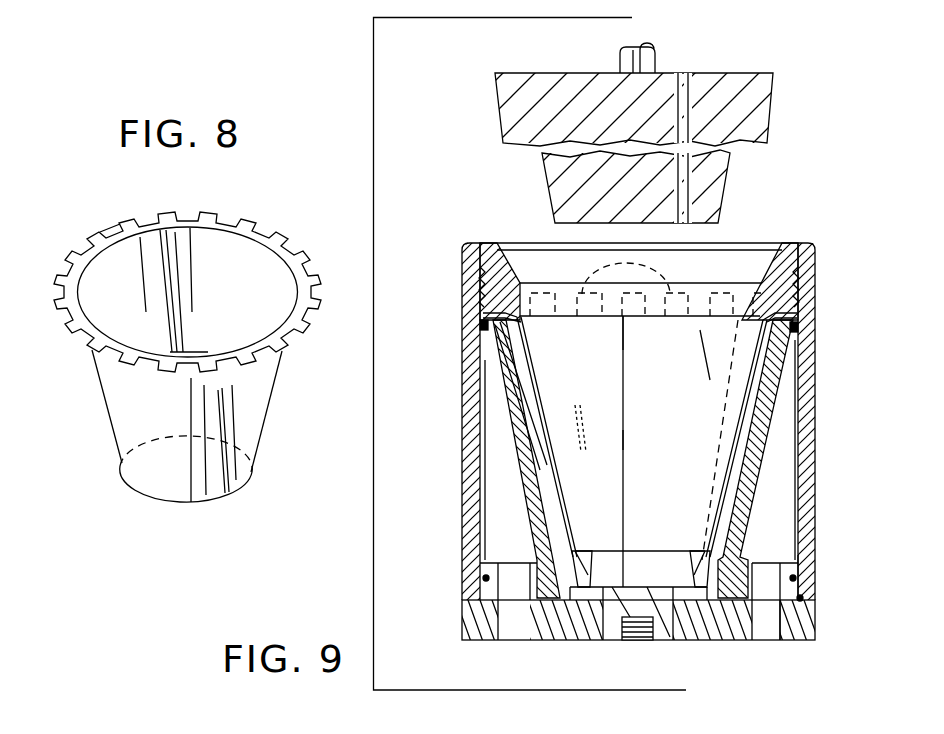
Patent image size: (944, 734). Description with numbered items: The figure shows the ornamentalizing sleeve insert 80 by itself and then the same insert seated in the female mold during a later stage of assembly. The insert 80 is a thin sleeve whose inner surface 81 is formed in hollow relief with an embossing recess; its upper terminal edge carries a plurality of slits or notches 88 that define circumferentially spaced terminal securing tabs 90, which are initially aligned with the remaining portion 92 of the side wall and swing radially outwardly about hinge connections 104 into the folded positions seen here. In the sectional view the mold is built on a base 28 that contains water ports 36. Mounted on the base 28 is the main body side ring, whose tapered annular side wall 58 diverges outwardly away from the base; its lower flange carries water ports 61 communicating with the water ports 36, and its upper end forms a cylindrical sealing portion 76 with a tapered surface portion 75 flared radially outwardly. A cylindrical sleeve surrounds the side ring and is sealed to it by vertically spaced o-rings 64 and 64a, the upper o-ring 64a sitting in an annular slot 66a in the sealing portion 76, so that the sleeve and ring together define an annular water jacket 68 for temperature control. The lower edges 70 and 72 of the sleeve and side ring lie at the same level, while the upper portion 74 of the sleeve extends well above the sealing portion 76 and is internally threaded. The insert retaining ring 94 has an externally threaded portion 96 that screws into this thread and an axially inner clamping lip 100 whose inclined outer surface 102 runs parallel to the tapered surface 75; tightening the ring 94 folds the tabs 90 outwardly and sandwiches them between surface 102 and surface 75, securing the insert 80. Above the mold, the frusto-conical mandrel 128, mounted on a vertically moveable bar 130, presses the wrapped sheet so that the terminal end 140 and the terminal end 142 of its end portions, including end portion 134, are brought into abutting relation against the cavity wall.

In FIG. 9, the base 28 is at (472, 640).
In FIG. 9, the water ports 36 is at (520, 628).
In FIG. 9, the tapered annular side wall 58 is at (758, 430).
In FIG. 9, the water ports 61 is at (518, 563).
In FIG. 9, the annular o-ring 64 is at (793, 563).
In FIG. 9, the annular o-ring 64a is at (480, 330).
In FIG. 9, the annular slot 66a is at (503, 343).
In FIG. 9, the annular water jacket 68 is at (762, 498).
In FIG. 9, the lower edge of cylindrical sleeve 70 is at (803, 597).
In FIG. 9, the lower edge of main body side ring 72 is at (788, 640).
In FIG. 9, the upper portion of cylindrical sleeve 74 is at (817, 292).
In FIG. 9, the tapered surface portion 75 is at (480, 322).
In FIG. 9, the upper cylindrical sealing portion 76 is at (805, 315).
In FIG. 8, the ornamentalizing sleeve insert 80 is at (156, 512).
In FIG. 8, the inner surface of insert 81 is at (252, 313).
In FIG. 9, the inner surface of insert 81 is at (602, 395).
In FIG. 8, the slits or notches 88 is at (307, 270).
In FIG. 8, the terminal securing tabs 90 is at (95, 235).
In FIG. 9, the terminal securing tabs 90 is at (641, 284).
In FIG. 8, the remaining portion of side wall 92 is at (127, 428).
In FIG. 9, the insert retaining ring 94 is at (533, 243).
In FIG. 9, the externally threaded portion 96 is at (467, 243).
In FIG. 9, the insert retaining clamping lip 100 is at (520, 312).
In FIG. 9, the inclined outer surface 102 is at (752, 310).
In FIG. 8, the hinge connections 104 is at (200, 212).
In FIG. 9, the mandrel 128 is at (765, 85).
In FIG. 9, the vertically moveable bar 130 is at (655, 60).
In FIG. 9, the terminal end portion of sheet 134 is at (553, 436).
In FIG. 9, the terminal end 140 is at (623, 348).
In FIG. 9, the terminal end 142 is at (625, 445).